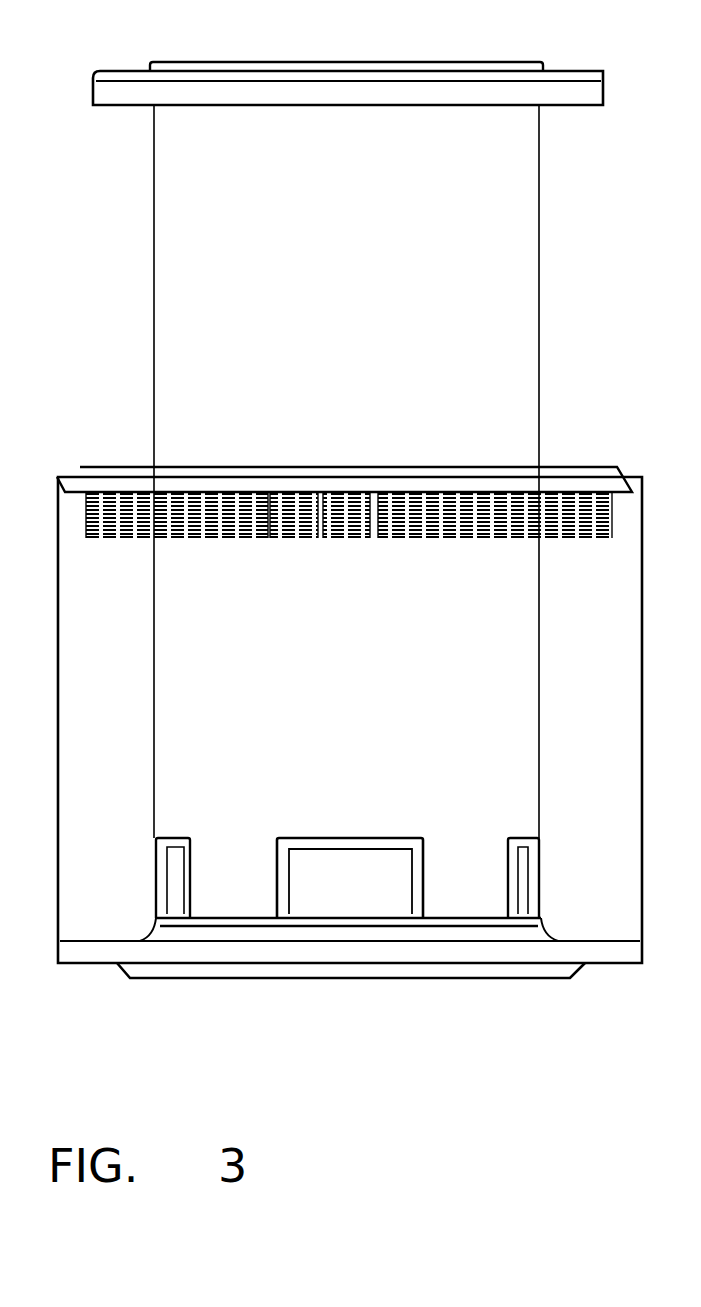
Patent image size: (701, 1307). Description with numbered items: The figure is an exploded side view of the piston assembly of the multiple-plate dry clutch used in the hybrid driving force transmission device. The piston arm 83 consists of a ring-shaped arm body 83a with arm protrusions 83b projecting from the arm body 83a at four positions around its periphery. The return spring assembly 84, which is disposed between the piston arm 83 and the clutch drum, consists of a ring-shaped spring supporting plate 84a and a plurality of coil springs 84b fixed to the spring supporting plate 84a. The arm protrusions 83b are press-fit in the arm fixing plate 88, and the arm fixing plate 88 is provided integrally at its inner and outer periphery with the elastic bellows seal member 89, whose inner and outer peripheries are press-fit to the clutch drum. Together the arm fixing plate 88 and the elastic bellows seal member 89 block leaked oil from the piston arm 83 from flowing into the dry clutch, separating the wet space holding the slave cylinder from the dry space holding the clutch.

The piston arm 83 is at (160, 980).
The arm body 83a is at (303, 955).
The arm protrusions 83b is at (183, 866).
The return spring assembly 84 is at (323, 505).
The spring supporting plate 84a is at (70, 472).
The coil springs 84b is at (355, 540).
The arm fixing plate 88 is at (210, 63).
The elastic bellows seal member 89 is at (216, 98).